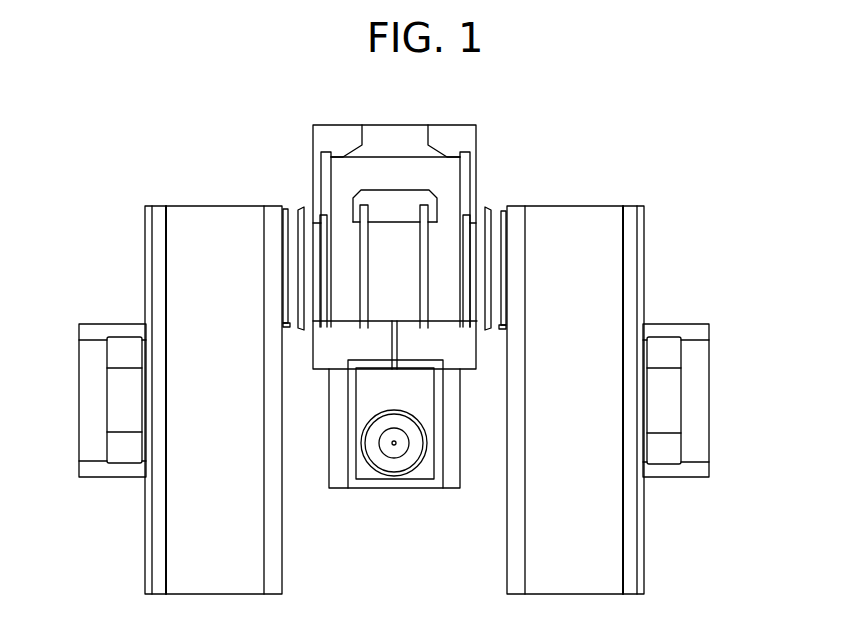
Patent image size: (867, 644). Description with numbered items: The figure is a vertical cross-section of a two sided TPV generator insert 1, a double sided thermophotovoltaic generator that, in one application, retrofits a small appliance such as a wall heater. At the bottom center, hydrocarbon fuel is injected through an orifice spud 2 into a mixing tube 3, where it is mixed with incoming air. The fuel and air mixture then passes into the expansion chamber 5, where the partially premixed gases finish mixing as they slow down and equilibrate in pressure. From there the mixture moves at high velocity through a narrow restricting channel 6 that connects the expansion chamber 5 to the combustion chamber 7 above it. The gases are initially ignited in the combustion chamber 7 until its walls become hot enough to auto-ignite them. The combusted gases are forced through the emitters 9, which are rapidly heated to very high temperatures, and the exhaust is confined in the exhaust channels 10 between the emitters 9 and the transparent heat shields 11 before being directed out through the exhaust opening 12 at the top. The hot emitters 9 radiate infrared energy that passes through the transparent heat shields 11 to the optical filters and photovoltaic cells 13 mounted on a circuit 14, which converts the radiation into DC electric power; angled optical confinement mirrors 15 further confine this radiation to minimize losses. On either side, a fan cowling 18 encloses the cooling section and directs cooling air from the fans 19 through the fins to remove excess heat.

The two sided TPV generator insert 1 is at (704, 96).
The orifice spud 2 is at (397, 453).
The mixing tube 3 is at (392, 475).
The expansion chamber 5 is at (368, 408).
The restricting channel 6 is at (393, 350).
The combustion chamber 7 is at (392, 295).
The emitters 9 is at (361, 250).
The exhaust channels 10 is at (343, 197).
The transparent heat shields 11 is at (321, 250).
The exhaust opening 12 is at (402, 138).
The optical filters and photovoltaic cells 13 is at (283, 293).
The circuit 14 is at (283, 325).
The angled optical confinement mirrors 15 is at (300, 327).
The fan cowling 18 is at (147, 240).
The fans 19 is at (128, 405).